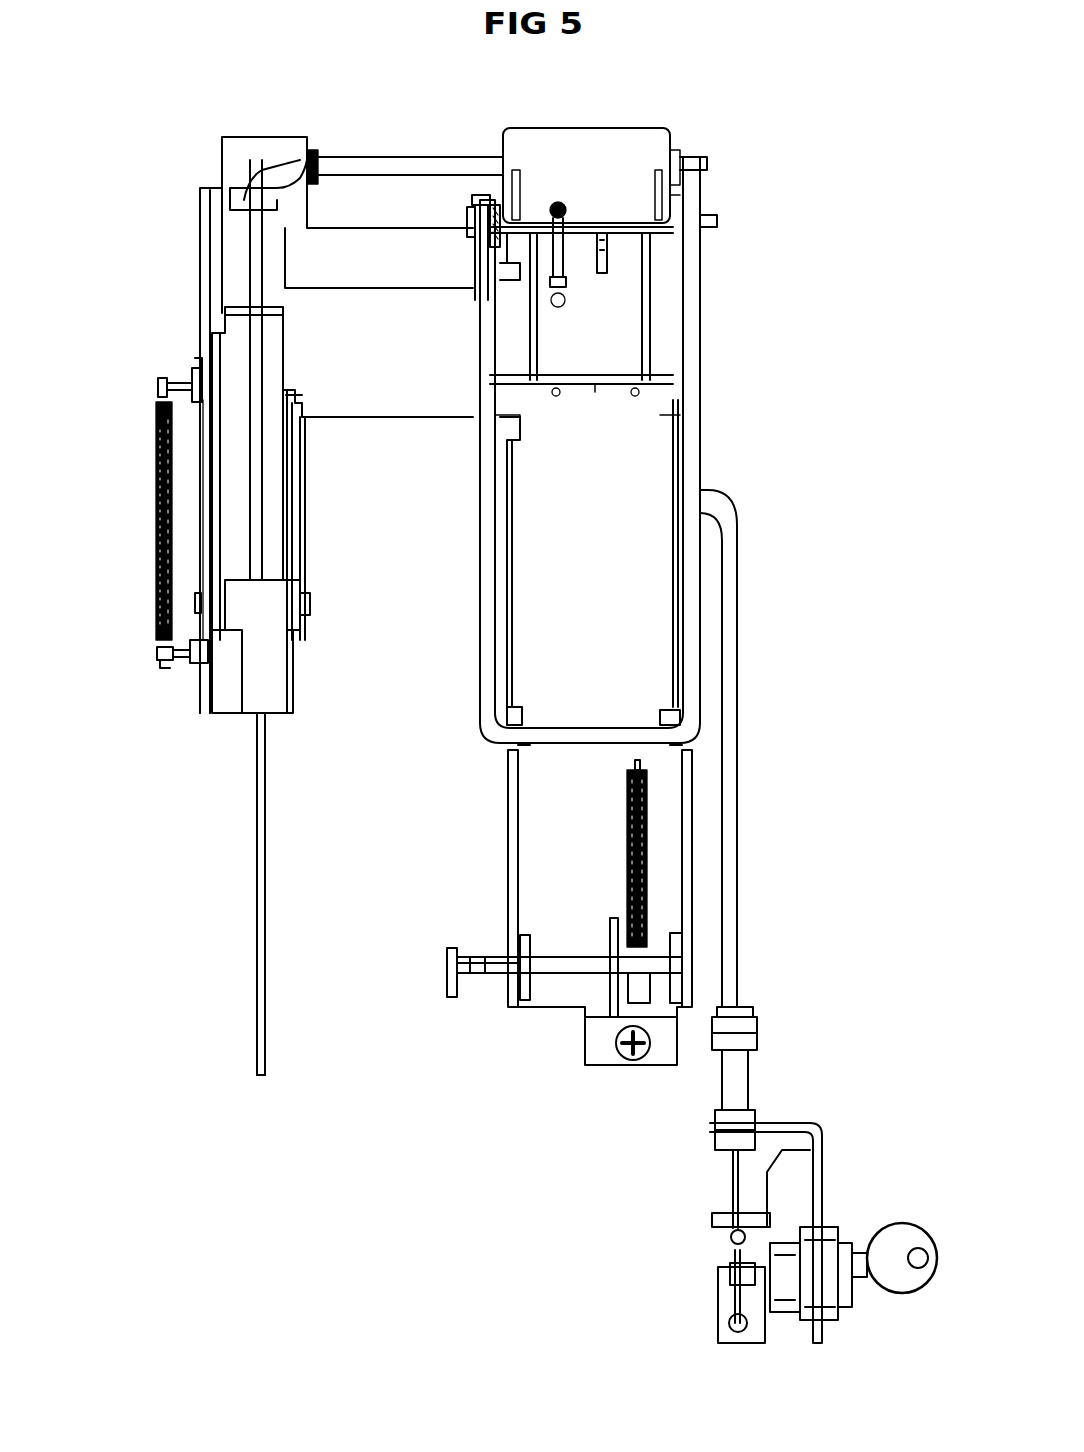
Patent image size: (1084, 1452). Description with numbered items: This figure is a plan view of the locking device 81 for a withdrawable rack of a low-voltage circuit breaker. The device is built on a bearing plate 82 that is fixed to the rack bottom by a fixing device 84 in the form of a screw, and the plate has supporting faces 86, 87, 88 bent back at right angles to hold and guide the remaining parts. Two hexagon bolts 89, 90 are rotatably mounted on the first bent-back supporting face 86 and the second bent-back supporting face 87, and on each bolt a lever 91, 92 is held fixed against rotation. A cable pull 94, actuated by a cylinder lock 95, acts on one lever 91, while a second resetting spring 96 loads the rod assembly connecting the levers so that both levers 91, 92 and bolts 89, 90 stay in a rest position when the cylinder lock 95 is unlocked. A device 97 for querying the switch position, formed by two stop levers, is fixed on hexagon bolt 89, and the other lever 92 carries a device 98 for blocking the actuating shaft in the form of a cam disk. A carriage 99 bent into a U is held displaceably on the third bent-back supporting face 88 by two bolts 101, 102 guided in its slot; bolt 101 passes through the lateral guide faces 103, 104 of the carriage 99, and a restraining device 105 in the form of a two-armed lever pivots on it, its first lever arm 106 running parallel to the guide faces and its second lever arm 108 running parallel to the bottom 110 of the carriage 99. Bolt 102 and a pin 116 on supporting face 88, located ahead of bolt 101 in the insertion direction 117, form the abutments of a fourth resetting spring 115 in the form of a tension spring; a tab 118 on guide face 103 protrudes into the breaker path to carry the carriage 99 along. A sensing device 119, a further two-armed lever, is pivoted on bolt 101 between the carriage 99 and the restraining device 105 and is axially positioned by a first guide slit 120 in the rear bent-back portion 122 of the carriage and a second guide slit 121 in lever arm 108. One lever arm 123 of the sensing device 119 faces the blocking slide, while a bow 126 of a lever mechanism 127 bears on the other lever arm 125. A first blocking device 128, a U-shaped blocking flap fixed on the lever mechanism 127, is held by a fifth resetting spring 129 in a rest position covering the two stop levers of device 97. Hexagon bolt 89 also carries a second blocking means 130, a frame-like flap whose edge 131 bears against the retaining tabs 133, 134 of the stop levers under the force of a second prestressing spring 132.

The locking device 81 is at (477, 1058).
The bearing plate 82 is at (528, 880).
The fixing device 84 is at (627, 1065).
The first bent-back supporting face 86 is at (675, 578).
The second bent-back supporting face 87 is at (512, 576).
The third bent-back supporting face 88 is at (212, 695).
The hexagon bolt 89 is at (680, 240).
The hexagon bolt 90 is at (550, 978).
The lever 91 is at (607, 250).
The lever 92 is at (610, 938).
The cable pull 94 is at (738, 802).
The cylinder lock 95 is at (833, 1222).
The second resetting spring 96 is at (627, 884).
The device for querying the position of the switch 97 is at (642, 336).
The device for blocking the actuating shaft 98 is at (447, 966).
The carriage 99 is at (290, 534).
The bolt 101 is at (312, 604).
The bolt 102 is at (175, 380).
The lateral guide face 103 is at (212, 528).
The lateral guide face 104 is at (305, 562).
The restraining device 105 is at (280, 625).
The first lever arm 106 is at (300, 498).
The second lever arm 108 is at (287, 694).
The bottom of the carriage 110 is at (290, 456).
The fourth resetting spring 115 is at (150, 465).
The pin 116 is at (182, 665).
The insertion direction 117 is at (347, 812).
The tab 118 is at (212, 350).
The sensing device 119 is at (258, 800).
The first guide slit 120 is at (262, 310).
The second guide slit 121 is at (270, 720).
The rear bent-back portion 122 is at (280, 312).
The lever arm 123 is at (268, 1050).
The lever arm 125 is at (248, 230).
The bow 126 is at (276, 198).
The lever mechanism 127 is at (428, 165).
The first blocking device 128 is at (592, 128).
The fifth resetting spring 129 is at (565, 215).
The second blocking means 130 is at (700, 410).
The edge 131 is at (596, 386).
The second prestressing spring 132 is at (484, 243).
The retaining tab 133 is at (540, 386).
The retaining tab 134 is at (640, 386).